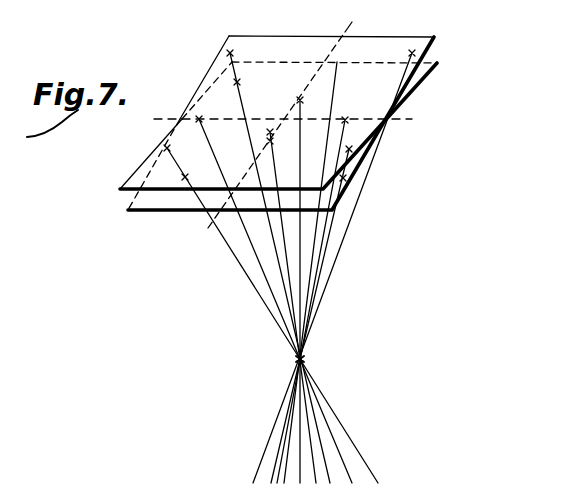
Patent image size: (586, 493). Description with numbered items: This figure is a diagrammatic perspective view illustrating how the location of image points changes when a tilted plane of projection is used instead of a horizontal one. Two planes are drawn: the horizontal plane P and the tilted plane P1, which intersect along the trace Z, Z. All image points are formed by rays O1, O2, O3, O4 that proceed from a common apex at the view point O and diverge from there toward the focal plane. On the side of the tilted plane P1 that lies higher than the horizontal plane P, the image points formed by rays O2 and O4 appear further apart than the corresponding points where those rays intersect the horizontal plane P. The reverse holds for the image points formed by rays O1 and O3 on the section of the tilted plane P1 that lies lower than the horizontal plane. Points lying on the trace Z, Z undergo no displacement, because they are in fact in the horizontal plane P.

The tilted plane of projection P1 is at (436, 43).
The horizontal plane of projection P is at (430, 73).
The trace of the horizontal plane with the tilted plane Z is at (281, 120).
The common apex O is at (305, 358).
The ray O1 is at (222, 240).
The ray O2 is at (270, 225).
The ray O3 is at (377, 158).
The ray O4 is at (333, 220).